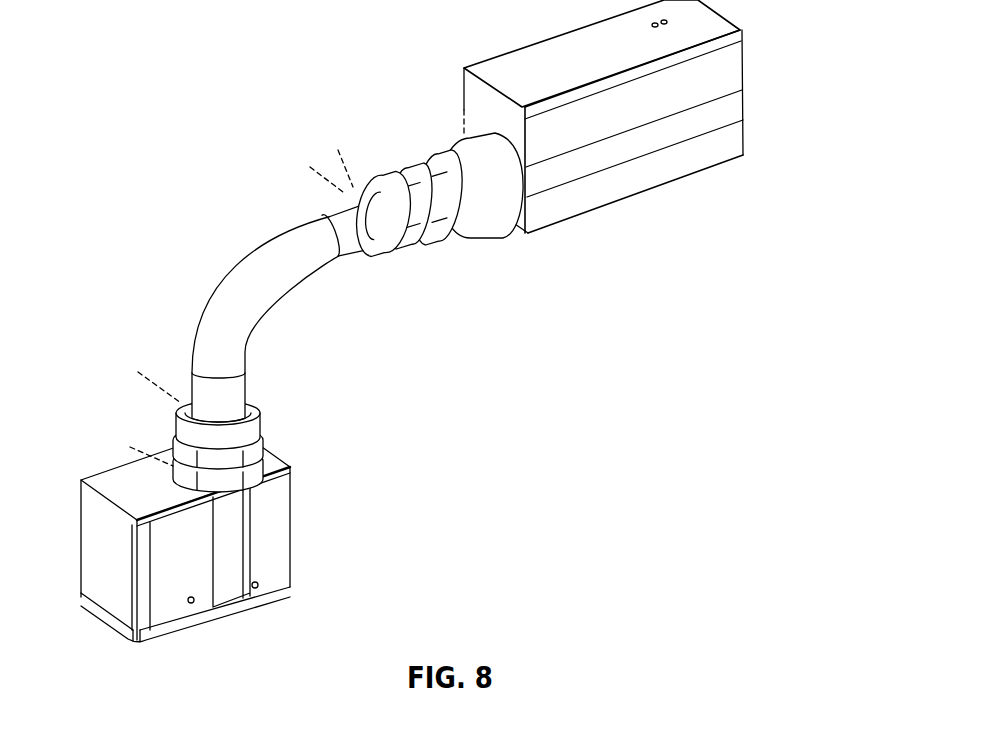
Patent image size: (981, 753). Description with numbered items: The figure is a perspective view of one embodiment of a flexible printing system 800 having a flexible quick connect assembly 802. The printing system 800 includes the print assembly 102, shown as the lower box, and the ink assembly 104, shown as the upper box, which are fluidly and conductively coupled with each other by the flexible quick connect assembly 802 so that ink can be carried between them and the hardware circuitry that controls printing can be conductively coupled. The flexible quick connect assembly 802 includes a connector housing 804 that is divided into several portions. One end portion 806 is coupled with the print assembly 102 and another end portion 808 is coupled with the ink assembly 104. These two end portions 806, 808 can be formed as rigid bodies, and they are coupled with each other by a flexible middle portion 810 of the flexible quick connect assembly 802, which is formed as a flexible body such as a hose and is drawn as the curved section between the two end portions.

The print assembly 102 is at (120, 487).
The ink assembly 104 is at (510, 77).
The flexible printing system 800 is at (105, 665).
The flexible quick connect assembly 802 is at (616, 404).
The connector housing 804 is at (283, 288).
The end portion 806 is at (157, 388).
The end portion 808 is at (461, 103).
The flexible middle portion 810 is at (320, 163).